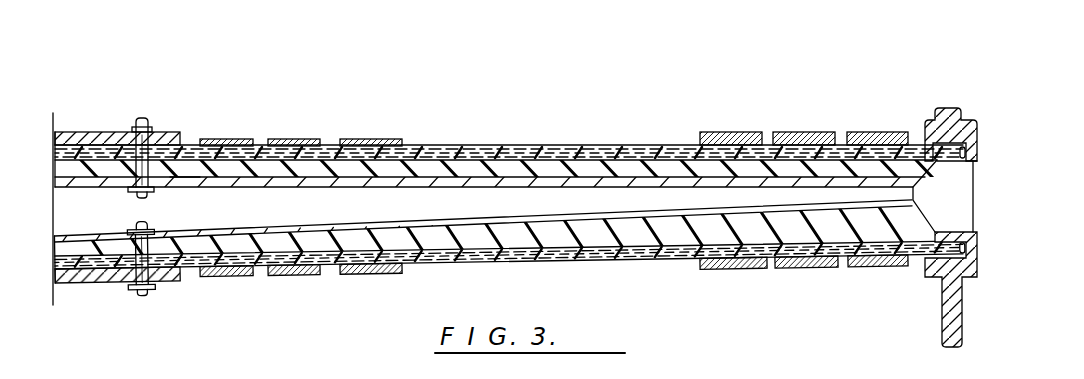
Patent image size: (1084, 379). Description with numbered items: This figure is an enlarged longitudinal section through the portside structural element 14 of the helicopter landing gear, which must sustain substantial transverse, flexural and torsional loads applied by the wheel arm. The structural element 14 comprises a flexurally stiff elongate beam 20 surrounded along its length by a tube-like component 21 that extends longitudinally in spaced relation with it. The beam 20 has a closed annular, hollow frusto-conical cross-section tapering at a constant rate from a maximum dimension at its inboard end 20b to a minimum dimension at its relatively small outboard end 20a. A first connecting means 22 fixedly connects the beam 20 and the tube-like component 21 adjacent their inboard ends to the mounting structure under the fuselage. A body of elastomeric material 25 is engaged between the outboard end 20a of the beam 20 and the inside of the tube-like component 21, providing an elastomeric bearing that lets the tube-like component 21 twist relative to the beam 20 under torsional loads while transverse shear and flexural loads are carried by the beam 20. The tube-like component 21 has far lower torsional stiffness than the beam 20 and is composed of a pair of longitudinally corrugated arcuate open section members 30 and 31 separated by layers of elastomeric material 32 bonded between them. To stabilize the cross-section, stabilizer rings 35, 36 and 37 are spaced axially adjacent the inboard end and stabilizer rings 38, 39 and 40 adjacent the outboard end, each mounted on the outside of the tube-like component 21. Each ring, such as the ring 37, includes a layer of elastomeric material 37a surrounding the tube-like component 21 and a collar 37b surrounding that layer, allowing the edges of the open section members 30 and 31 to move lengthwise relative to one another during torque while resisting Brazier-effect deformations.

The portside structural element 14 is at (474, 150).
The elongate beam 20 is at (548, 183).
The outboard end of the beam 20a is at (877, 182).
The inboard end of the beam 20b is at (184, 177).
The tube-like component 21 is at (626, 149).
The first connecting means 22 is at (98, 133).
The body of elastomeric material 25 is at (833, 167).
The open section member 30 is at (452, 259).
The open section member 31 is at (528, 261).
The layers of elastomeric material 32 is at (487, 259).
The stabilizer ring 35 is at (220, 140).
The stabilizer ring 36 is at (280, 140).
The stabilizer ring 37 is at (345, 140).
The layer of elastomeric material 37a is at (343, 271).
The collar 37b is at (378, 274).
The stabilizer ring 38 is at (707, 269).
The stabilizer ring 39 is at (790, 269).
The stabilizer ring 40 is at (867, 268).